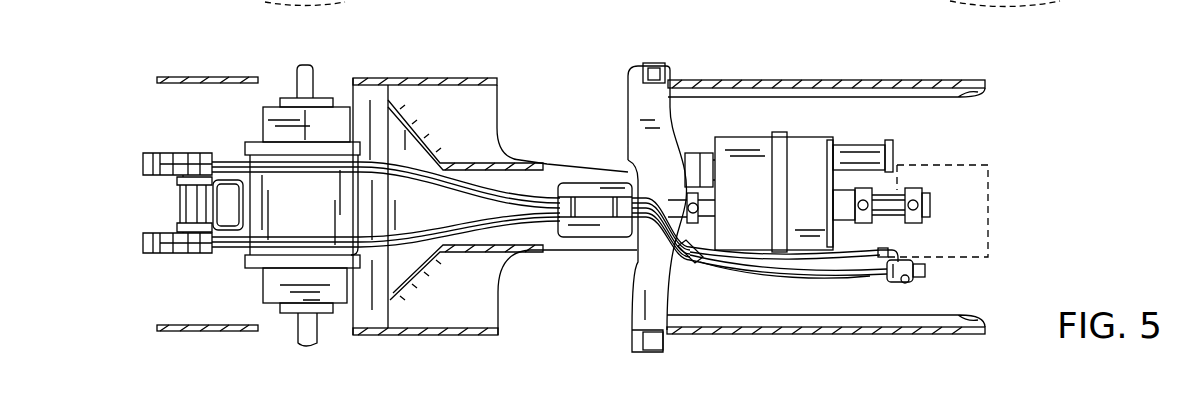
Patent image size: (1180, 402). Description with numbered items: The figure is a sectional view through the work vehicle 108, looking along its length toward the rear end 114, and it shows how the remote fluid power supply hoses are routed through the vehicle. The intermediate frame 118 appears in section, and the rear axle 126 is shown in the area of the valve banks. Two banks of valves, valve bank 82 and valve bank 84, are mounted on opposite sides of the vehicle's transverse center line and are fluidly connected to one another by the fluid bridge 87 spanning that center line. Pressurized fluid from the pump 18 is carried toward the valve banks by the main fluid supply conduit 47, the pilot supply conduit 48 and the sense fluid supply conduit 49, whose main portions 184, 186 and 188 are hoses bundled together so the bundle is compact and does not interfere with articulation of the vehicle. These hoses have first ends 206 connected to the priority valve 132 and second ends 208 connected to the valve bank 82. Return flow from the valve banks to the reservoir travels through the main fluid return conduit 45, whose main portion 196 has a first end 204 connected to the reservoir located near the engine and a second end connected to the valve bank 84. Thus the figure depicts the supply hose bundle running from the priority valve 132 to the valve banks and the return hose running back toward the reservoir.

The rear end 114 is at (66, 74).
The work vehicle 108 is at (176, 70).
The second ends 208 is at (214, 159).
The valve bank 82 is at (189, 152).
The valve bank 84 is at (188, 260).
The fluid bridge 87 is at (183, 208).
The first ends 206 is at (900, 252).
The rear axle 126 is at (320, 80).
The intermediate frame 118 is at (426, 77).
The main portion 184 is at (488, 186).
The main fluid supply conduit 47 is at (538, 195).
The main portion 196 is at (458, 233).
The main fluid return conduit 45 is at (510, 228).
The pilot supply conduit 48 is at (680, 256).
The first end 204 is at (703, 265).
The main portion 186 is at (723, 257).
The sense fluid supply conduit 49 is at (810, 274).
The main portion 188 is at (851, 270).
The pump 18 is at (860, 147).
The priority valve 132 is at (917, 268).